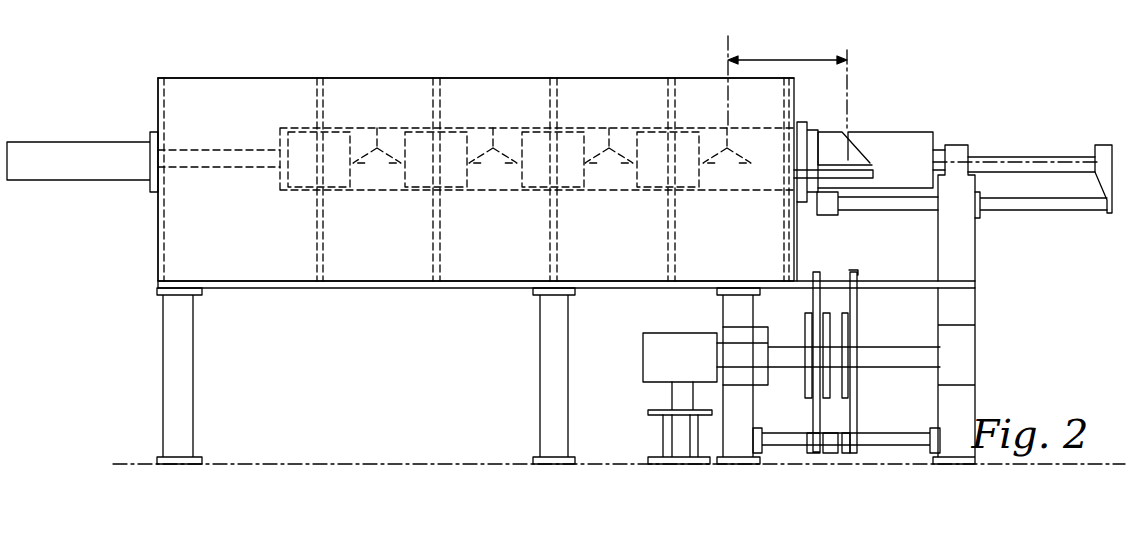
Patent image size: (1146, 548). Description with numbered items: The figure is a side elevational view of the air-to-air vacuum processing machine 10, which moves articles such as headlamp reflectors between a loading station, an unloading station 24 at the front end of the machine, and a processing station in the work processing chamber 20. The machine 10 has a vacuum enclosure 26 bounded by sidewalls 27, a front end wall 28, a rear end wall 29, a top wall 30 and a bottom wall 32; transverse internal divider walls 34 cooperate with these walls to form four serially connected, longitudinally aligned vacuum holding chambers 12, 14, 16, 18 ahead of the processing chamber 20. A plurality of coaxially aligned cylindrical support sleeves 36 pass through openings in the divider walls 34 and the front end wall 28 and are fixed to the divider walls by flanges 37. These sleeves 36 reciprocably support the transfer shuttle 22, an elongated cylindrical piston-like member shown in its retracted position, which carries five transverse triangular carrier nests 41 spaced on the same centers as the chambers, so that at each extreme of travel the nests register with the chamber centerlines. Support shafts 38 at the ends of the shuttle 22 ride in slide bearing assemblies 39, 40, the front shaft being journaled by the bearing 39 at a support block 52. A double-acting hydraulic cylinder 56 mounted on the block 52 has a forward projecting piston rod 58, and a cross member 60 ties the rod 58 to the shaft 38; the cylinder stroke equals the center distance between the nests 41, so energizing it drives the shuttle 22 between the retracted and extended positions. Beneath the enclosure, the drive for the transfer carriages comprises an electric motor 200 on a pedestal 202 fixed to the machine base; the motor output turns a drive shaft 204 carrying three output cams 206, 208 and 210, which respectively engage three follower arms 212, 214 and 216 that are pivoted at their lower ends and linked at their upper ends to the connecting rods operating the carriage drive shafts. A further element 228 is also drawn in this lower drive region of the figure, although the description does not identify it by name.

The air-to-air vacuum processing machine 10 is at (148, 79).
The vacuum holding chamber 12 is at (705, 95).
The vacuum holding chamber 14 is at (580, 92).
The vacuum holding chamber 16 is at (477, 92).
The vacuum holding chamber 18 is at (342, 95).
The work processing chamber 20 is at (227, 95).
The transfer shuttle 22 is at (918, 128).
The unloading station 24 is at (857, 172).
The vacuum enclosure 26 is at (407, 78).
The sidewalls 27 is at (490, 268).
The front end wall 28 is at (803, 120).
The rear end wall 29 is at (158, 105).
The top wall 30 is at (293, 78).
The bottom wall 32 is at (271, 288).
The transverse internal divider walls 34 is at (437, 238).
The cylindrical support sleeves 36 is at (420, 128).
The flanges 37 is at (798, 195).
The support shafts 38 is at (218, 150).
The slide bearing assembly 39 is at (957, 160).
The slide bearing assembly 40 is at (47, 157).
The transverse triangular carrier nests 41 is at (378, 165).
The support block 52 is at (967, 254).
The double-acting hydraulic cylinder 56 is at (893, 200).
The piston rod 58 is at (1047, 200).
The cross member 60 is at (1103, 155).
The electric motor 200 is at (657, 350).
The pedestal 202 is at (665, 428).
The drive shaft 204 is at (870, 355).
The output cam 206 is at (808, 377).
The output cam 208 is at (828, 328).
The output cam 210 is at (845, 341).
The follower arm 212 is at (815, 292).
The follower arm 214 is at (828, 278).
The follower arm 216 is at (853, 272).
The link 228 is at (872, 442).